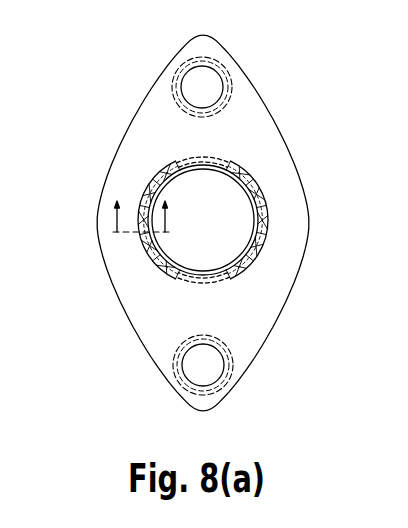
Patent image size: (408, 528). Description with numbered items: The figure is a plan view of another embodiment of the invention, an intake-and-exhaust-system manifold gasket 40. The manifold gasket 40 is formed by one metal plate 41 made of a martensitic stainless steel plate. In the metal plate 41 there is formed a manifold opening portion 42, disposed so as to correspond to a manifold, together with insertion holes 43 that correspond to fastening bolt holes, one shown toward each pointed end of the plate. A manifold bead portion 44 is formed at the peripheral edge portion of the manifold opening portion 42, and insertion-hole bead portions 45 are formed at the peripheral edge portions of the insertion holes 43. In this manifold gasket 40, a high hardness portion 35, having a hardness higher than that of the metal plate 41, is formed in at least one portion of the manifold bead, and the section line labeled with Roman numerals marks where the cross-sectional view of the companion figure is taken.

The high hardness portion 35 is at (145, 191).
The manifold gasket 40 is at (215, 225).
The metal plate 41 is at (287, 306).
The manifold opening portion 42 is at (250, 222).
The insertion hole 43 is at (232, 97).
The manifold bead portion 44 is at (203, 208).
The insertion-hole bead portion 45 is at (228, 76).